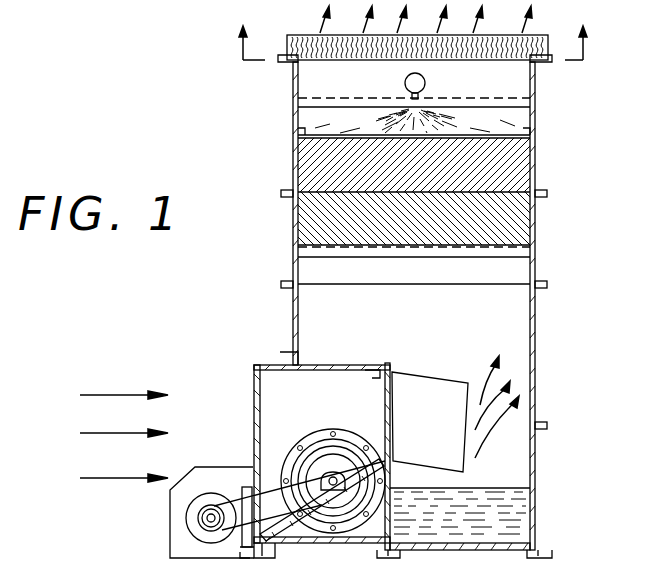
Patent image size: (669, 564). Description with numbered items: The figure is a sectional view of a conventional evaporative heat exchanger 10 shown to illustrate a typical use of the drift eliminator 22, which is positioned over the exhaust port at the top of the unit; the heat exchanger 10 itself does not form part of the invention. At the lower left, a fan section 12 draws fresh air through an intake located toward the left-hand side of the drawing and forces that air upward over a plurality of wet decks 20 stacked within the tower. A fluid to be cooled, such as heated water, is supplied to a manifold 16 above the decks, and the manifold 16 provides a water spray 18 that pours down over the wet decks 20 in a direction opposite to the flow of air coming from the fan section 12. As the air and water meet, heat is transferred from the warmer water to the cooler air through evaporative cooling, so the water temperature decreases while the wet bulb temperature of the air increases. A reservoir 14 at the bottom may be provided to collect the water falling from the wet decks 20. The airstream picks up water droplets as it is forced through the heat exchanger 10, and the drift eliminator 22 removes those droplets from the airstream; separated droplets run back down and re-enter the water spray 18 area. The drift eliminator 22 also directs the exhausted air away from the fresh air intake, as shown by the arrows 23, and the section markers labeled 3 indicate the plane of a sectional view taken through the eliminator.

The evaporative heat exchanger 10 is at (572, 261).
The fan section 12 is at (275, 381).
The reservoir 14 is at (518, 517).
The manifold 16 is at (405, 84).
The water spray 18 is at (465, 126).
The wet decks 20 is at (313, 172).
The drift eliminator 22 is at (525, 32).
The arrows 23 is at (311, 31).
The section line 3- 3 is at (411, 61).